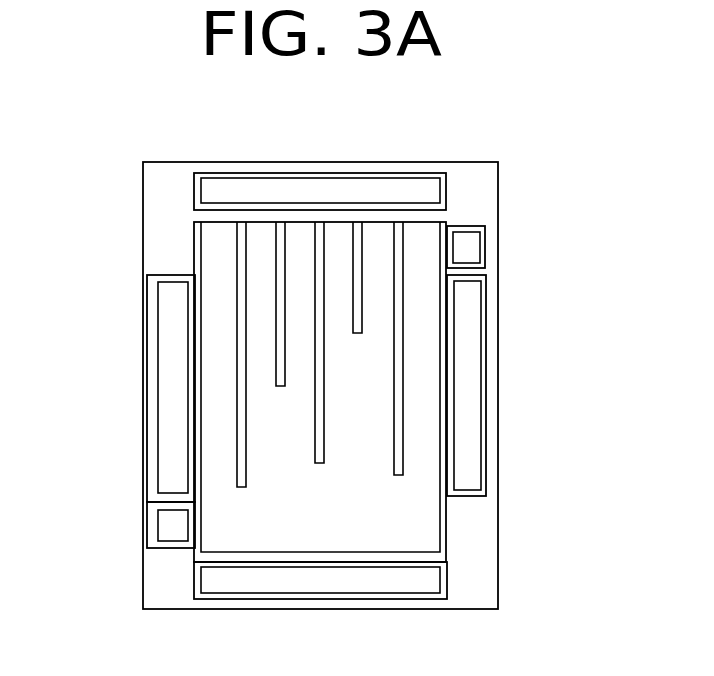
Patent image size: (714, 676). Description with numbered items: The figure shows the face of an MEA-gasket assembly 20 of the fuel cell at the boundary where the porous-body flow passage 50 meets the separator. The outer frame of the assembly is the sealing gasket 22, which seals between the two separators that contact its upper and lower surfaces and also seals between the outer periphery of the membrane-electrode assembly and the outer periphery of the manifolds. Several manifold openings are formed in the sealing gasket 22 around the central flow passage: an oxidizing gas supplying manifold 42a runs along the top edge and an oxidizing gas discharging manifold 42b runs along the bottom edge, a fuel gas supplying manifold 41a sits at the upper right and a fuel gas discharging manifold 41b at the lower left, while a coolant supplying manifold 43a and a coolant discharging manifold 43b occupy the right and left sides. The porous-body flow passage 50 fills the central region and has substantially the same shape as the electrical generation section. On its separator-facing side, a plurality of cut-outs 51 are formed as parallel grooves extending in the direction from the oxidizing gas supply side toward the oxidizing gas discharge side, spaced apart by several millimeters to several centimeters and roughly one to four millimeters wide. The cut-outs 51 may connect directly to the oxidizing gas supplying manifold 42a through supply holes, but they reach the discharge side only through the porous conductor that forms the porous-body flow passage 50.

The MEA-gasket assembly 20 is at (178, 162).
The sealing gasket 22 is at (476, 185).
The oxidizing gas supplying manifold 42a is at (311, 188).
The oxidizing gas discharging manifold 42b is at (362, 580).
The porous-body flow passage 50 is at (203, 235).
The cut-outs 51 is at (237, 263).
The fuel gas supplying manifold 41a is at (472, 252).
The fuel gas discharging manifold 41b is at (173, 523).
The coolant supplying manifold 43a is at (467, 378).
The coolant discharging manifold 43b is at (173, 366).